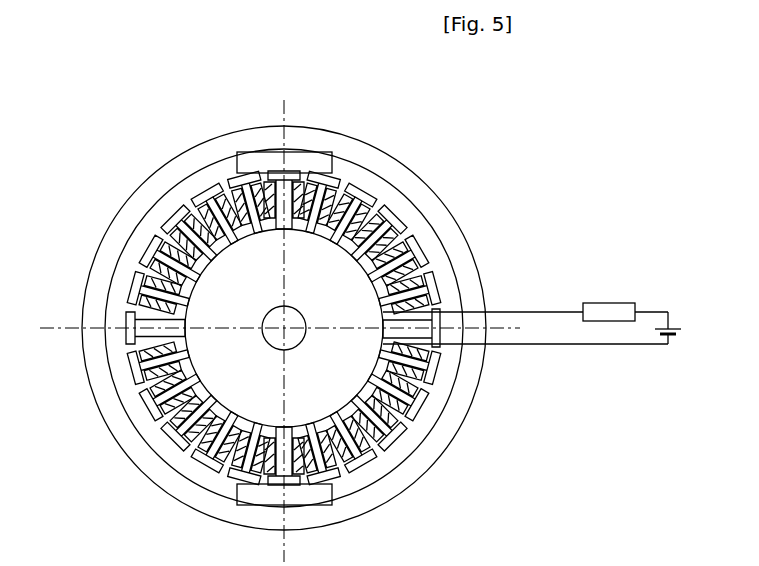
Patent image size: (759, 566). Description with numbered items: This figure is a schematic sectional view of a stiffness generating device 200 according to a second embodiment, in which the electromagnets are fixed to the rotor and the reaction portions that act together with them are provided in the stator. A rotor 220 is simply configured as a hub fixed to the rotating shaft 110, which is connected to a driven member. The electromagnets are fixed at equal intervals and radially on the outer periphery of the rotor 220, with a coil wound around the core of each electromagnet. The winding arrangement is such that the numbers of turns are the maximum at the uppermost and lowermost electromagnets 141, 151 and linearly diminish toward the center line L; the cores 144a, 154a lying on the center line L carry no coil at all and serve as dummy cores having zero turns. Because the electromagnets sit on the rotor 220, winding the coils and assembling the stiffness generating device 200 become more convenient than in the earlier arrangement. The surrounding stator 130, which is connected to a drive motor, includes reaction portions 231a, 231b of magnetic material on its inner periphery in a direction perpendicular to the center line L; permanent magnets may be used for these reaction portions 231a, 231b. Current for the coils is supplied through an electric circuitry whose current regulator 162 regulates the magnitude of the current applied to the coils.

The stiffness generating device 200 is at (78, 128).
The rotating shaft 110 is at (273, 328).
The stator 130 is at (470, 237).
The uppermost electromagnet 141 is at (243, 144).
The lowermost electromagnet 151 is at (244, 512).
The dummy core 144a is at (483, 308).
The dummy core 154a is at (111, 318).
The current regulator 162 is at (607, 302).
The rotor 220 is at (224, 303).
The reaction portion 231a is at (350, 141).
The reaction portion 231b is at (342, 523).
The center line L is at (280, 316).